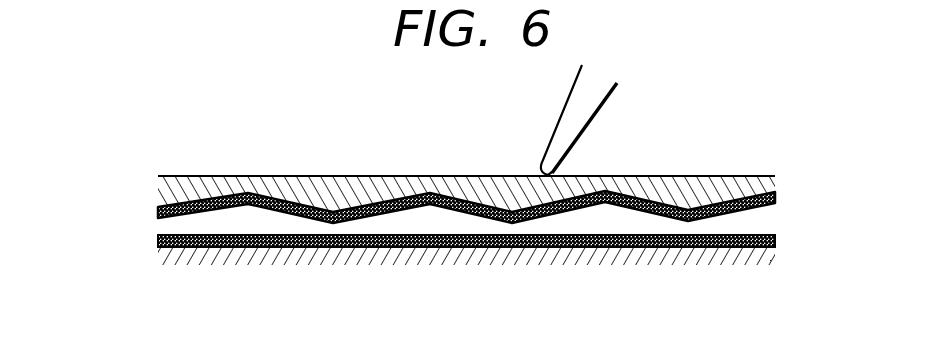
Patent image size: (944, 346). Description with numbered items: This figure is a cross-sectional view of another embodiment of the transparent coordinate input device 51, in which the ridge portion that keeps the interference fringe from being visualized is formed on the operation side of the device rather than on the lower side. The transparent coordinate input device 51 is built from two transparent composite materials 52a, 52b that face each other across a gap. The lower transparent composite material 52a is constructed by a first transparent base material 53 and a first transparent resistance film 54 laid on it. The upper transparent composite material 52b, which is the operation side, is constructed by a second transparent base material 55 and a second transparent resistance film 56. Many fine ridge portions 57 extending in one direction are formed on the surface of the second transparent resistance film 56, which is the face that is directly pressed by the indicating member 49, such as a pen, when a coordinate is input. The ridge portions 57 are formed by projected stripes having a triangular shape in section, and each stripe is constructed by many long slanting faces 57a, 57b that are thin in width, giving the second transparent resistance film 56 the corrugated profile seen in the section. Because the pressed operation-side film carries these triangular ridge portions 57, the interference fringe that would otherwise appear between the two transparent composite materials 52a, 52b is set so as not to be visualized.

The indicating member 49 is at (575, 132).
The transparent coordinate input device 51 is at (724, 108).
The transparent composite material 52a is at (146, 253).
The transparent composite material 52b is at (146, 195).
The first transparent base material 53 is at (778, 252).
The first transparent resistance film 54 is at (775, 240).
The second transparent base material 55 is at (751, 175).
The second transparent resistance film 56 is at (773, 195).
The ridge portions 57 is at (517, 222).
The long slanting face 57a is at (392, 210).
The long slanting face 57b is at (288, 212).